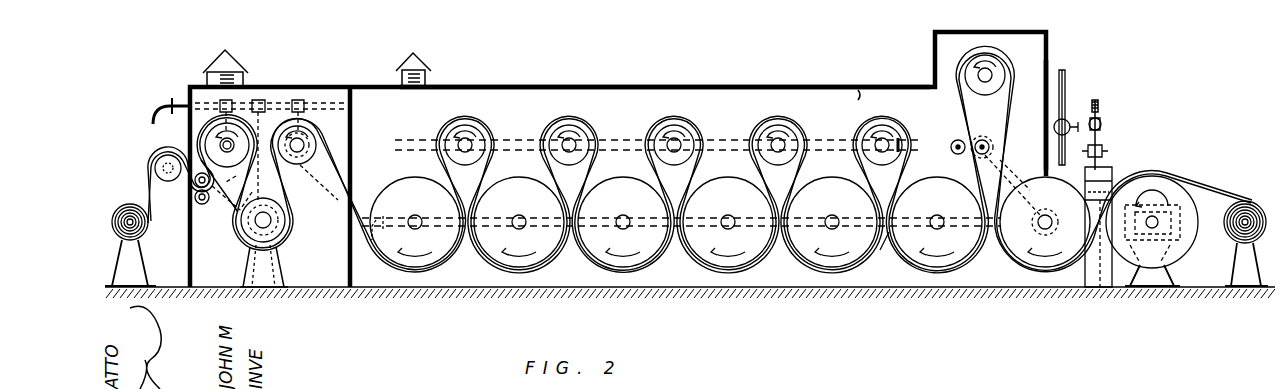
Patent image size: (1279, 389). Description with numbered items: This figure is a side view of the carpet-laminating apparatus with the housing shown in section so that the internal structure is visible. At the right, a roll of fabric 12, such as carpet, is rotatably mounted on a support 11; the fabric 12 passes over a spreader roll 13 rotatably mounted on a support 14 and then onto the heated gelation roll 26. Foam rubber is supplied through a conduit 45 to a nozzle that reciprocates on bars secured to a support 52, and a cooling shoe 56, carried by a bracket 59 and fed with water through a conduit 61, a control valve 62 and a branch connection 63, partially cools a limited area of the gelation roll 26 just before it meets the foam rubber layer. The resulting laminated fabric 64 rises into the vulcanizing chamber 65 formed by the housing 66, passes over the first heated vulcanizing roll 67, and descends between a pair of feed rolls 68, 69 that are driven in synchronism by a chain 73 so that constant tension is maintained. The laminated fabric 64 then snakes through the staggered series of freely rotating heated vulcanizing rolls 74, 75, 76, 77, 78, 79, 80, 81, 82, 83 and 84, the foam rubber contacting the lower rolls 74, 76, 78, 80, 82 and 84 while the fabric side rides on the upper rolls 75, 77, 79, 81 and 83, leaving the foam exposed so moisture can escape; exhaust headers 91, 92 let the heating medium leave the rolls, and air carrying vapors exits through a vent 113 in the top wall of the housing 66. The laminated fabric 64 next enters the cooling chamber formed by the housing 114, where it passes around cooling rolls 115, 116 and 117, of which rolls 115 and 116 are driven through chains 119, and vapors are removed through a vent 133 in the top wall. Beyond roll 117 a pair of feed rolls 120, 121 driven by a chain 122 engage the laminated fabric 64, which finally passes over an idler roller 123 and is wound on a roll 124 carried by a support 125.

The support 11 is at (1240, 290).
The fabric 12 is at (1234, 205).
The spreader roll 13 is at (1192, 250).
The support 14 is at (1160, 286).
The gelation roll 26 is at (1020, 250).
The conduit 45 is at (1103, 120).
The support 52 is at (1112, 192).
The shoe 56 is at (1112, 178).
The bracket 59 is at (1048, 62).
The conduit 61 is at (1068, 93).
The control valve 62 is at (1103, 105).
The branch connection 63 is at (1090, 146).
The laminated fabric 64 is at (155, 168).
The vulcanizing chamber 65 is at (860, 98).
The housing 66 is at (757, 85).
The first heated vulcanizing roll 67 is at (985, 65).
The feed roll 68 is at (952, 142).
The feed roll 69 is at (982, 138).
The chain 73 is at (1010, 195).
The heated vulcanizing roll 74 is at (928, 192).
The heated vulcanizing roll 75 is at (896, 120).
The heated vulcanizing roll 76 is at (838, 192).
The heated vulcanizing roll 77 is at (790, 120).
The heated vulcanizing roll 78 is at (735, 192).
The heated vulcanizing roll 79 is at (688, 120).
The heated vulcanizing roll 80 is at (590, 245).
The heated vulcanizing roll 81 is at (582, 122).
The heated vulcanizing roll 82 is at (496, 190).
The heated vulcanizing roll 83 is at (482, 124).
The heated vulcanizing roll 84 is at (393, 192).
The exhaust header 91 is at (887, 250).
The exhaust header 92 is at (812, 148).
The vent 113 is at (428, 58).
The housing 114 is at (306, 84).
The cooling roll 115 is at (353, 140).
The cooling roll 116 is at (280, 240).
The cooling roll 117 is at (237, 127).
The chain 119 is at (300, 185).
The feed roll 120 is at (195, 185).
The feed roll 121 is at (196, 204).
The chain 122 is at (214, 230).
The idler roller 123 is at (160, 150).
The roll 124 is at (120, 212).
The support 125 is at (145, 268).
The vent 133 is at (235, 64).